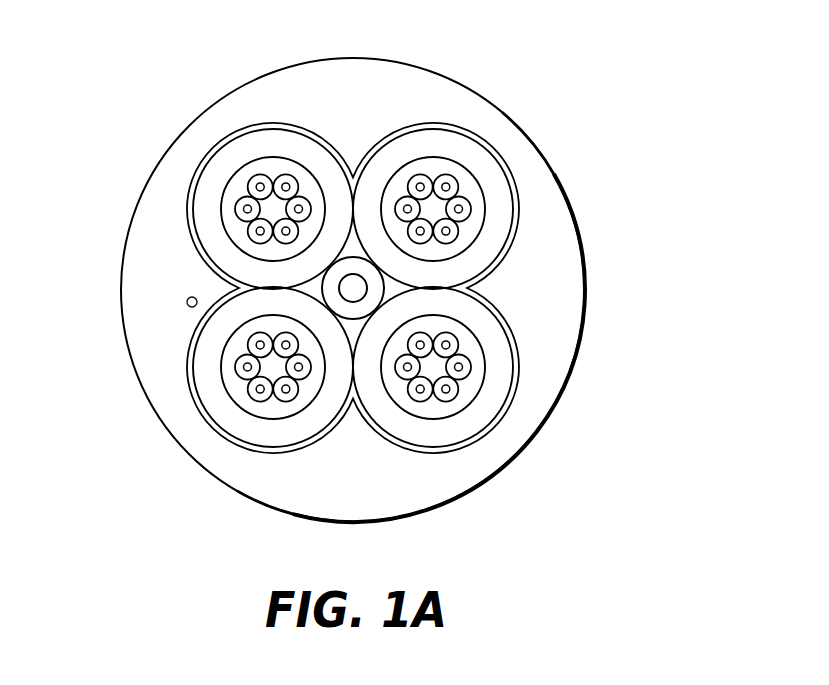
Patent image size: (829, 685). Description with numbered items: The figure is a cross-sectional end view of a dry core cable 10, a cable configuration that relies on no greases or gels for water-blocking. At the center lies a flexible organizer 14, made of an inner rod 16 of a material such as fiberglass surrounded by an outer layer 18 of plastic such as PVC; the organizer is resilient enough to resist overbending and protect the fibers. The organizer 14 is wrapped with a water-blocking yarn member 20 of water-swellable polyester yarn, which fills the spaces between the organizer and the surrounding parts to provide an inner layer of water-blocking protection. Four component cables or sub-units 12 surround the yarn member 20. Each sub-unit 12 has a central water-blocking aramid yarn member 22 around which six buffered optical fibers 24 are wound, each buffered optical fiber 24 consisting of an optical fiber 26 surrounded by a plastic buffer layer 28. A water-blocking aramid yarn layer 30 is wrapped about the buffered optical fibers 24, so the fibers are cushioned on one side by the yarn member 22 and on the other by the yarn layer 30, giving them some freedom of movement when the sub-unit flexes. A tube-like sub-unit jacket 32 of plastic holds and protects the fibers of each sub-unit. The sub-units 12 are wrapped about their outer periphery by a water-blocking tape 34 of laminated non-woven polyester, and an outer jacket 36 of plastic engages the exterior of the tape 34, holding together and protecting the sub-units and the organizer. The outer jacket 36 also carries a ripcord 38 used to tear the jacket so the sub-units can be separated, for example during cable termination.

The dry core cable 10 is at (128, 78).
The sub-unit 12 is at (305, 113).
The organizer 14 is at (312, 295).
The inner rod 16 is at (358, 293).
The outer layer 18 is at (347, 308).
The water-blocking yarn member 20 is at (354, 257).
The central water-blocking aramid yarn member 22 is at (437, 368).
The buffered optical fiber 24 is at (428, 163).
The optical fiber 26 is at (461, 206).
The buffer layer 28 is at (462, 214).
The water-blocking aramid yarn layer 30 is at (244, 190).
The sub-unit jacket 32 is at (260, 145).
The water-blocking tape 34 is at (500, 260).
The outer jacket 36 is at (143, 238).
The ripcord 38 is at (187, 300).